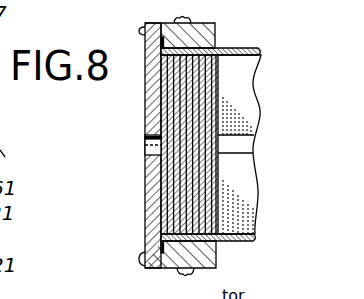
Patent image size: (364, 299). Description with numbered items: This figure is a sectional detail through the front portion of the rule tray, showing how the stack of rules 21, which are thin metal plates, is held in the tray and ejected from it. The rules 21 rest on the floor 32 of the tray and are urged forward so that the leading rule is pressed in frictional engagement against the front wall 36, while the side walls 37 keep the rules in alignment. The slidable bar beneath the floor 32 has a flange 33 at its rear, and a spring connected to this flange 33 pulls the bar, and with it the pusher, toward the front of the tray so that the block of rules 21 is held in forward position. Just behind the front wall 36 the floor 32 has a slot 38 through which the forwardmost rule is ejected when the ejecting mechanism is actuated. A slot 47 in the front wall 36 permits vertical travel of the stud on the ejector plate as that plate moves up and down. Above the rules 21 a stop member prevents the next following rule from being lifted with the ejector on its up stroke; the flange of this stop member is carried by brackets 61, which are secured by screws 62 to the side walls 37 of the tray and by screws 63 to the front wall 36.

The rules 21 is at (180, 98).
The floor 32 is at (243, 106).
The flange 33 is at (312, 0).
The front wall 36 is at (146, 172).
The side walls 37 is at (258, 47).
The slot 38 is at (178, 237).
The slot 47 is at (146, 141).
The brackets 61 is at (215, 33).
The screws 62 is at (192, 22).
The screws 63 is at (140, 29).